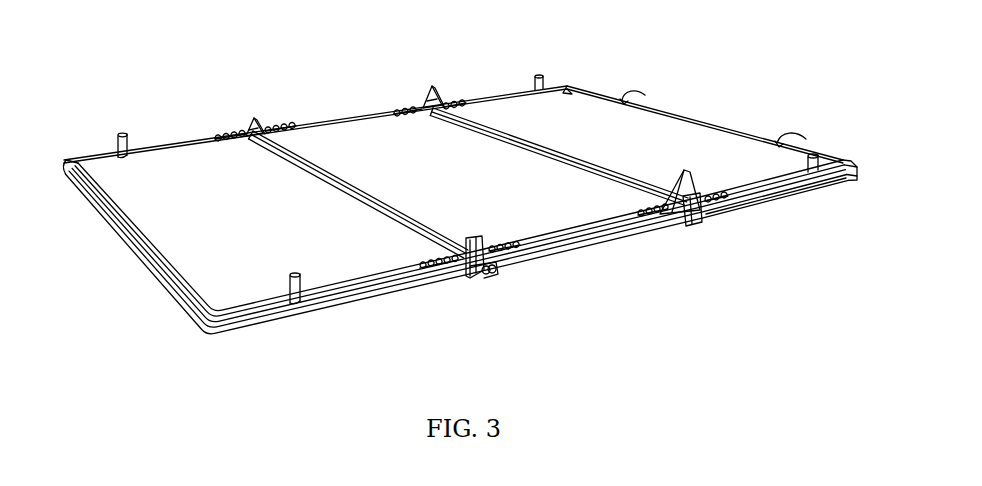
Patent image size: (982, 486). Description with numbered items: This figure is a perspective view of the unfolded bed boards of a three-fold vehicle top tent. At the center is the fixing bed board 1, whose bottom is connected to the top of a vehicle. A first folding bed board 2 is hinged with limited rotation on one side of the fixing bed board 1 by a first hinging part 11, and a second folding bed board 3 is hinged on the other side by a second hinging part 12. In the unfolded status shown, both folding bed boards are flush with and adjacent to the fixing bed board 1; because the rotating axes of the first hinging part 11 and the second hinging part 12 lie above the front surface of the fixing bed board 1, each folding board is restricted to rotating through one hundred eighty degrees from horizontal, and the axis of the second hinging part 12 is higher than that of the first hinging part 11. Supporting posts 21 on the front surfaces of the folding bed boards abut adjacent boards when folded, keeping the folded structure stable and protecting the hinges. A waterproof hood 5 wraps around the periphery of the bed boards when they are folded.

The fixing bed board 1 is at (557, 250).
The first folding bed board 2 is at (367, 287).
The second folding bed board 3 is at (740, 213).
The waterproof hood 5 is at (782, 200).
The first hinging part 11 is at (252, 123).
The second hinging part 12 is at (428, 87).
The supporting post 21 is at (118, 142).